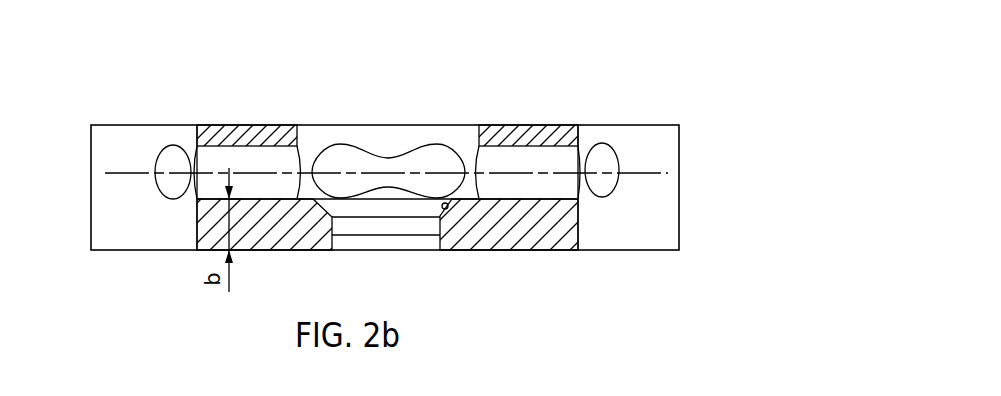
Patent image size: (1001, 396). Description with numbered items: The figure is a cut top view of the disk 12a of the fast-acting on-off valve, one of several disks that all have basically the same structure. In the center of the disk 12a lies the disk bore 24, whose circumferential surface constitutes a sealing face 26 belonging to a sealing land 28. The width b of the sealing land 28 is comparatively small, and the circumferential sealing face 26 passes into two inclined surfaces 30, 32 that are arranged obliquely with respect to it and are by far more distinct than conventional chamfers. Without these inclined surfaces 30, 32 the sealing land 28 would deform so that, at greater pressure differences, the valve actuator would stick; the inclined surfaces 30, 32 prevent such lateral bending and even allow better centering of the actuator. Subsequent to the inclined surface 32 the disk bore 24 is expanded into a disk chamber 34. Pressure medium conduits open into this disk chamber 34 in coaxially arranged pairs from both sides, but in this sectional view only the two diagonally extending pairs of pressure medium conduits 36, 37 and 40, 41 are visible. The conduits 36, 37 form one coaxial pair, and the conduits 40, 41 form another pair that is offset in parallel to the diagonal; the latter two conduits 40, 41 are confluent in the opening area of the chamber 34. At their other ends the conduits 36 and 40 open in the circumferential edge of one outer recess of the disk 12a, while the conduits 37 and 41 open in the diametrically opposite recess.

The disk 12a is at (585, 108).
The disk bore 24 is at (439, 226).
The sealing face 26 is at (351, 227).
The sealing land 28 is at (305, 228).
The inclined surface 30 is at (444, 210).
The inclined surface 32 is at (443, 212).
The disk chamber 34 is at (353, 135).
The pressure medium conduit 36 is at (524, 160).
The pressure medium conduit 37 is at (250, 161).
The pressure medium conduit 40 is at (608, 148).
The pressure medium conduit 41 is at (165, 149).